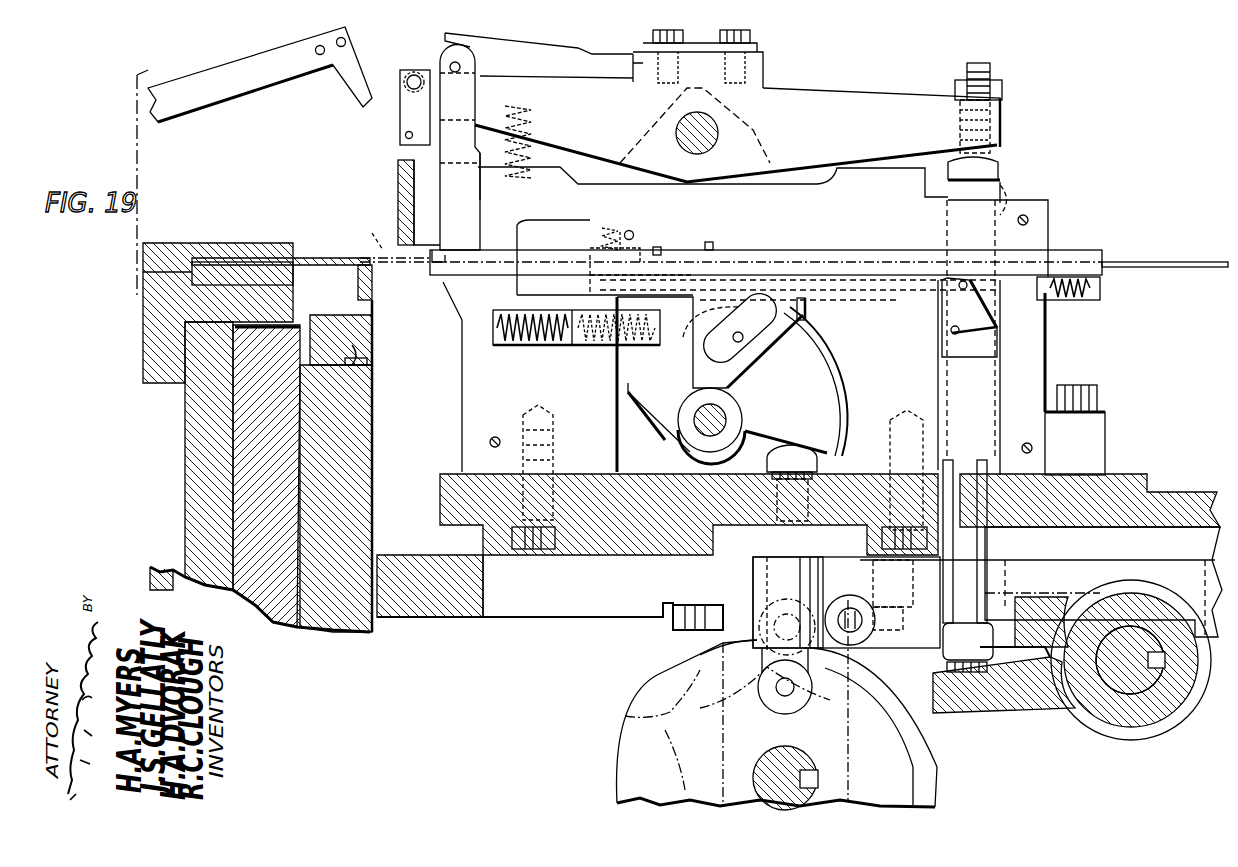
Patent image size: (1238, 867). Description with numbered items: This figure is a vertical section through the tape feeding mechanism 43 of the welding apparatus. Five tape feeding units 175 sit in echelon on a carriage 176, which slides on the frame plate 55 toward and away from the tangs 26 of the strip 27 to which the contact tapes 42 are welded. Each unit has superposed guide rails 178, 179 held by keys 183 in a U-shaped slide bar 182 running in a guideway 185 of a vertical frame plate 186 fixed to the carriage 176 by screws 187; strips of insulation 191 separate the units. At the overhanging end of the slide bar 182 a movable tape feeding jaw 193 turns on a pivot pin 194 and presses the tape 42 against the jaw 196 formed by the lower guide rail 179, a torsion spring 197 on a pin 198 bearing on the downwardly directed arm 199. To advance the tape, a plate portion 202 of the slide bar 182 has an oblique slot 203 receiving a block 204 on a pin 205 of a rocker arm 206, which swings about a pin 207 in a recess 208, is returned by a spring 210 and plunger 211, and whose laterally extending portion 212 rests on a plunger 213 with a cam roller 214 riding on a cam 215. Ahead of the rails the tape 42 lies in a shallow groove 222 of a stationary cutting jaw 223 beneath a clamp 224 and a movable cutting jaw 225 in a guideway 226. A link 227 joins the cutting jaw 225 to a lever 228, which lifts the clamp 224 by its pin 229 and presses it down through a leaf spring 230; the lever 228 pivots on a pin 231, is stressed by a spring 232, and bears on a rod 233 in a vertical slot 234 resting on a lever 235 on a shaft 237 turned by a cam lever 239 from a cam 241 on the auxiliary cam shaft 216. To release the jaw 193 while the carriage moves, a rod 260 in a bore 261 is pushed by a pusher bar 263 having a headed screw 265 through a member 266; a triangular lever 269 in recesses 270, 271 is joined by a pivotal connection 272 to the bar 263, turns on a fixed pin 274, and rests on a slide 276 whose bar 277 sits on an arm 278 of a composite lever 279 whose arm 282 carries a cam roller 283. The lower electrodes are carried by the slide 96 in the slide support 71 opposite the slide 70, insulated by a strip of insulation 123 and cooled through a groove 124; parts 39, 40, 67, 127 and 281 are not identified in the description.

The tangs 26 is at (362, 258).
The strip 27 is at (315, 252).
The frame block 39 is at (169, 240).
The plate 40 is at (362, 85).
The contact tape 42 is at (1195, 290).
The tape feeding mechanism 43 is at (1069, 136).
The frame plate 55 is at (425, 617).
The bar 67 is at (216, 262).
The slide 70 is at (192, 477).
The slide support 71 is at (243, 443).
The slide 96 is at (372, 420).
The strip of insulation 123 is at (367, 362).
The groove 124 is at (352, 367).
The arm 127 is at (226, 70).
The tape feeding unit 175 is at (1062, 194).
The carriage 176 is at (442, 487).
The upper guide rail 178 is at (733, 250).
The lower guide rail 179 is at (770, 255).
The slide bar 182 is at (830, 262).
The keys 183 is at (710, 244).
The guideway 185 is at (545, 226).
The frame plate 186 is at (1048, 215).
The screws 187 is at (513, 553).
The strips of insulation 191 is at (590, 470).
The movable tape feeding jaw 193 is at (620, 232).
The pivot pin 194 is at (655, 217).
The jaw 196 is at (661, 250).
The torsion spring 197 is at (590, 248).
The pin 198 is at (600, 228).
The arm 199 is at (600, 285).
The plate portion 202 is at (808, 340).
The slot 203 is at (755, 335).
The block 204 is at (740, 345).
The pin 205 is at (806, 394).
The rocker arm 206 is at (832, 383).
The pin 207 is at (700, 425).
The recess 208 is at (617, 395).
The spring 210 is at (523, 343).
The plunger 211 is at (617, 350).
The laterally extending portion 212 is at (817, 438).
The plunger 213 is at (820, 474).
The cam roller 214 is at (700, 690).
The cam 215 is at (937, 762).
The auxiliary cam shaft 216 is at (778, 755).
The groove 222 is at (432, 262).
The stationary cutting jaw 223 is at (443, 284).
The clamp 224 is at (418, 200).
The movable cutting jaw 225 is at (420, 153).
The guideway 226 is at (398, 185).
The link 227 is at (400, 116).
The lever 228 is at (551, 88).
The pin 229 is at (452, 66).
The leaf spring 230 is at (543, 38).
The pin 231 is at (717, 128).
The spring 232 is at (533, 153).
The rod 233 is at (990, 173).
The slot 234 is at (1002, 205).
The lever 235 is at (1025, 710).
The shaft 237 is at (1123, 693).
The cam lever 239 is at (940, 712).
The cam 241 is at (625, 716).
The rod 260 is at (808, 325).
The bore 261 is at (808, 310).
The pusher bar 263 is at (1030, 275).
The headed screw 265 is at (1100, 290).
The member 266 is at (1045, 300).
The triangular lever 269 is at (990, 327).
The recess 270 is at (1000, 285).
The recess 271 is at (985, 420).
The pivotal connection 272 is at (963, 281).
The fixed pin 274 is at (951, 333).
The slide 276 is at (1000, 385).
The bar 277 is at (990, 550).
The arm 278 is at (985, 600).
The composite lever 279 is at (1060, 600).
The body 281 is at (925, 648).
The arm 282 is at (842, 602).
The cam roller 283 is at (655, 675).